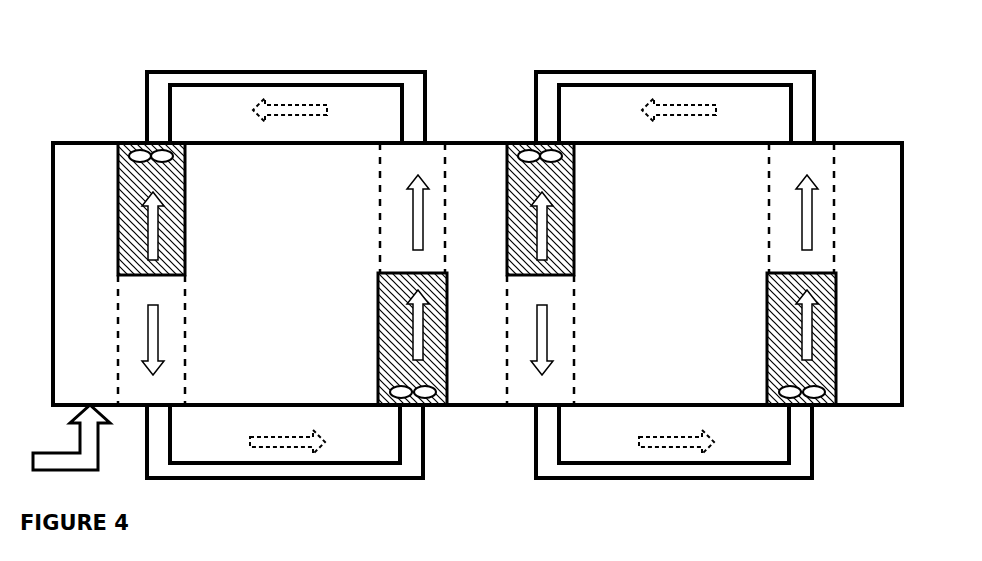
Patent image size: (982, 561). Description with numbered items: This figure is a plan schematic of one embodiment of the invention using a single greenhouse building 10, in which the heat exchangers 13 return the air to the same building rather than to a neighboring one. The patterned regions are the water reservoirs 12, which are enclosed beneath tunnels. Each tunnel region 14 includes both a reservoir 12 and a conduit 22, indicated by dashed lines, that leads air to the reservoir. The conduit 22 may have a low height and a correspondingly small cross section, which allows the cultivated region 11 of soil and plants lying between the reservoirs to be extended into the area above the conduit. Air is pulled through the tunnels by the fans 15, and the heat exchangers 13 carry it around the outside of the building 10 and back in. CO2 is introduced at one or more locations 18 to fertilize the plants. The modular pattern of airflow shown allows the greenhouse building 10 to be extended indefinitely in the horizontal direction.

The greenhouse building 10 is at (477, 262).
The cultivated region 11 is at (317, 212).
The water reservoir 12 is at (134, 181).
The heat exchanger 13 is at (286, 107).
The tunnel region 14 is at (368, 237).
The fan 15 is at (385, 383).
The CO2 introduction location 18 is at (71, 437).
The conduit 22 is at (132, 297).